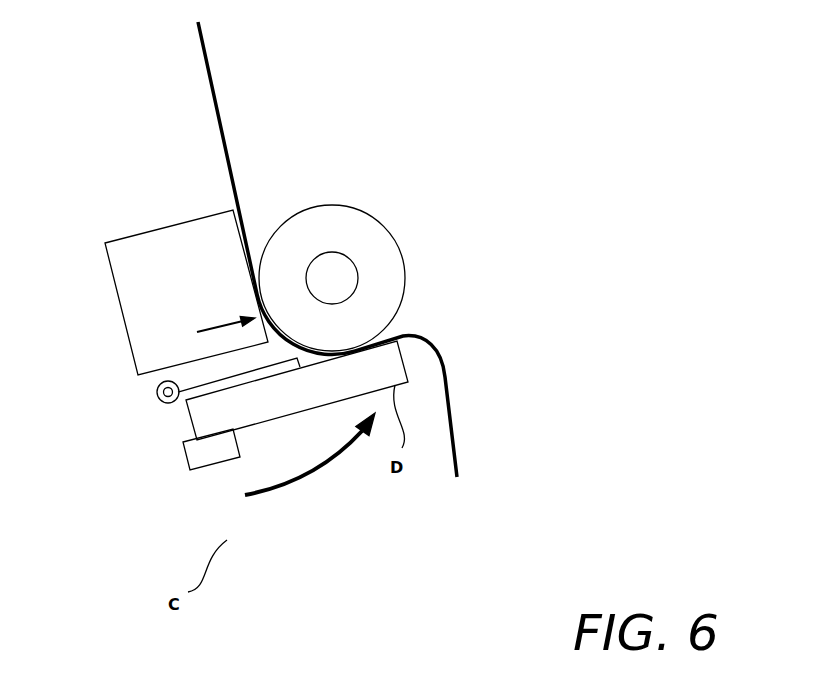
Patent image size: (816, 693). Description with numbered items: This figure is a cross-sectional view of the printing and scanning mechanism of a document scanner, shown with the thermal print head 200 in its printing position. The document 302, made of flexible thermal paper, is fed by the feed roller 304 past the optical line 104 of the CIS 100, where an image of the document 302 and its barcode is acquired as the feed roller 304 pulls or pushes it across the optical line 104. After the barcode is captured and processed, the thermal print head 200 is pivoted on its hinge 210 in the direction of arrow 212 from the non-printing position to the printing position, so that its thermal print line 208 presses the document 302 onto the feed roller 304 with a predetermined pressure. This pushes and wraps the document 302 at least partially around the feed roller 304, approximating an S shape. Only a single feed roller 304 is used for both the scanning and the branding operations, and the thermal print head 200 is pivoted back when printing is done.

The CIS 100 is at (125, 275).
The optical line 104 is at (204, 330).
The thermal print head 200 is at (280, 407).
The thermal print line 208 is at (357, 350).
The hinge 210 is at (157, 394).
The arrow 212 is at (318, 482).
The document 302 is at (217, 100).
The feed roller 304 is at (385, 240).